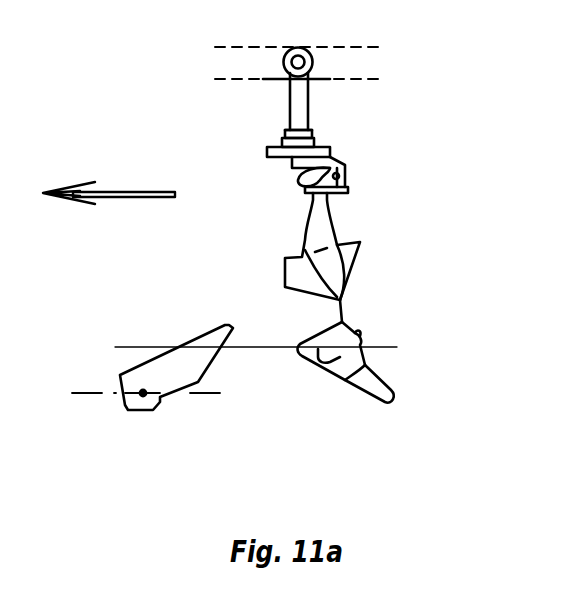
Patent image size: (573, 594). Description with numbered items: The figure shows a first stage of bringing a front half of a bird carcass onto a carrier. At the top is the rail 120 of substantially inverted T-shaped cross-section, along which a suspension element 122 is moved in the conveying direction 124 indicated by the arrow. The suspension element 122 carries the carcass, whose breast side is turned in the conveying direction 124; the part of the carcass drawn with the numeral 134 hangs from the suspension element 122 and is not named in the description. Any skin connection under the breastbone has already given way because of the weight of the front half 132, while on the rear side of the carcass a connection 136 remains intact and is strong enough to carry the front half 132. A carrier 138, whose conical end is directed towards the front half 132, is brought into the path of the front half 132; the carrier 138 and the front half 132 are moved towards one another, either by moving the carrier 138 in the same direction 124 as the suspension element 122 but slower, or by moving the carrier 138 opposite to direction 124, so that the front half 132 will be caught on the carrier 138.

The rail 120 is at (330, 62).
The suspension element 122 is at (330, 153).
The conveying direction 124 is at (125, 193).
The front half 132 is at (337, 343).
The twisted blade 134 is at (295, 270).
The connection 136 is at (342, 312).
The carrier 138 is at (163, 378).